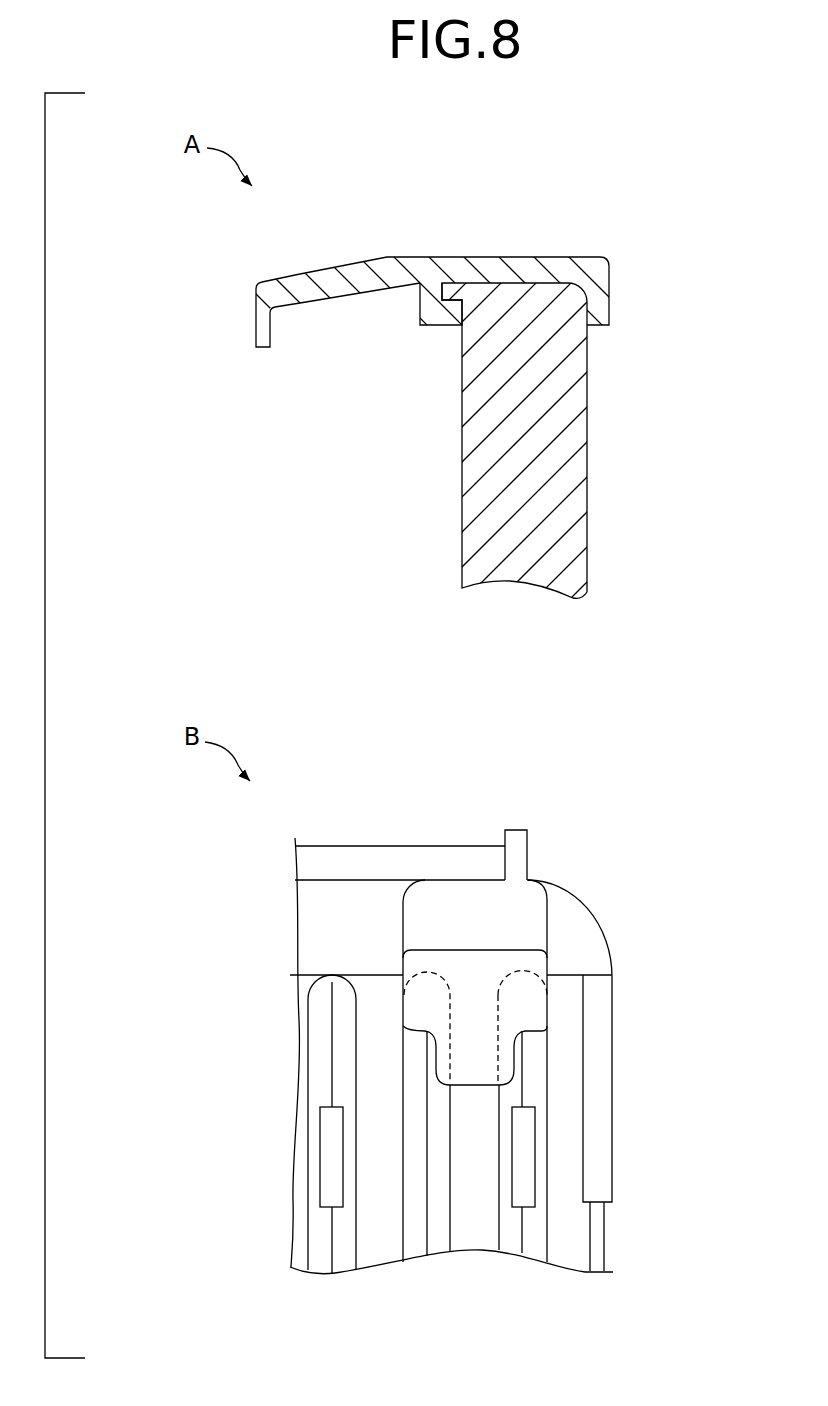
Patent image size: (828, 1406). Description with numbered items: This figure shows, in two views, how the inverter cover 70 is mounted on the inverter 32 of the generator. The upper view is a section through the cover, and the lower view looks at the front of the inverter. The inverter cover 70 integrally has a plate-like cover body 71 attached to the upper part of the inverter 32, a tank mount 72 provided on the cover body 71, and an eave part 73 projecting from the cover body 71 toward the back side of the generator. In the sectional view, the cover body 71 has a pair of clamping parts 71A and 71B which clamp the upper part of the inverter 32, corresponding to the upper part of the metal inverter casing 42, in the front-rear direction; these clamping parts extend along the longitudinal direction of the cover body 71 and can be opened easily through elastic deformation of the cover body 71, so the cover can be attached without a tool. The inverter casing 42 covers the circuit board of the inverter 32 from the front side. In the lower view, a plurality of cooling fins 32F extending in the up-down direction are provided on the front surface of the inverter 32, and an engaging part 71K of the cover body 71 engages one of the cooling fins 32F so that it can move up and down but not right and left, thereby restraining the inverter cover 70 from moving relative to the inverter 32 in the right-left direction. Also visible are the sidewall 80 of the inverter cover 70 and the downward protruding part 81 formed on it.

The inverter cover 70 is at (620, 261).
The cover body 71 is at (460, 845).
The clamping part 71A is at (442, 328).
The clamping part 71B is at (598, 327).
The engaging part 71K is at (533, 896).
The tank mount 72 is at (505, 257).
The eave part 73 is at (340, 263).
The sidewall 80 is at (517, 830).
The downward protruding part 81 is at (613, 1068).
The inverter casing 42 is at (605, 1220).
The inverter 32 is at (603, 507).
The cooling fin 32F is at (345, 1240).